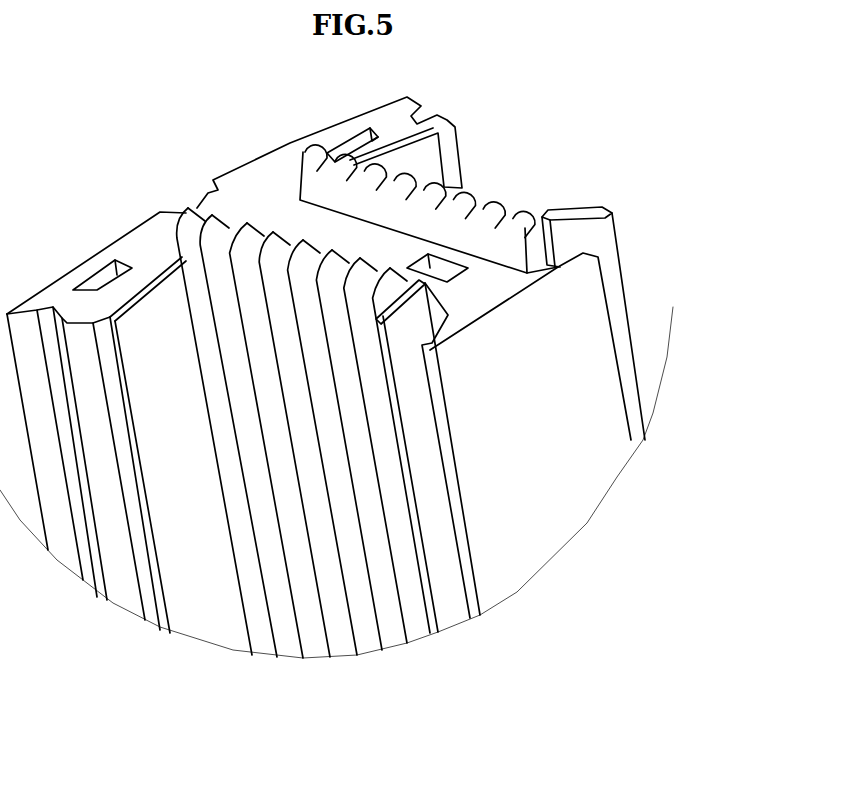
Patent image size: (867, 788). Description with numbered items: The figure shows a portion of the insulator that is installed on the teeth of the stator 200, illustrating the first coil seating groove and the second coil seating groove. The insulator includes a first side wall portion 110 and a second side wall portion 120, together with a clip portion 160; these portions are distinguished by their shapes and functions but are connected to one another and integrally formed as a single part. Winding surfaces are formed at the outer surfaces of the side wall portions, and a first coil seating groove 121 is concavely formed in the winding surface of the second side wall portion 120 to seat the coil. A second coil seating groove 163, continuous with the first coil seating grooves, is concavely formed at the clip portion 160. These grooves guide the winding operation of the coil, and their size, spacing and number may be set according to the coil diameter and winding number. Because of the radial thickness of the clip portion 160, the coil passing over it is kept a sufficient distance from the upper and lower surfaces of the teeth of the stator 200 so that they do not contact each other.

The first side wall portion 110 is at (627, 365).
The second side wall portion 120 is at (430, 505).
The first coil seating groove 121 is at (330, 547).
The clip portion 160 is at (597, 230).
The second coil seating groove 163 is at (485, 207).
The stator 200 is at (273, 183).